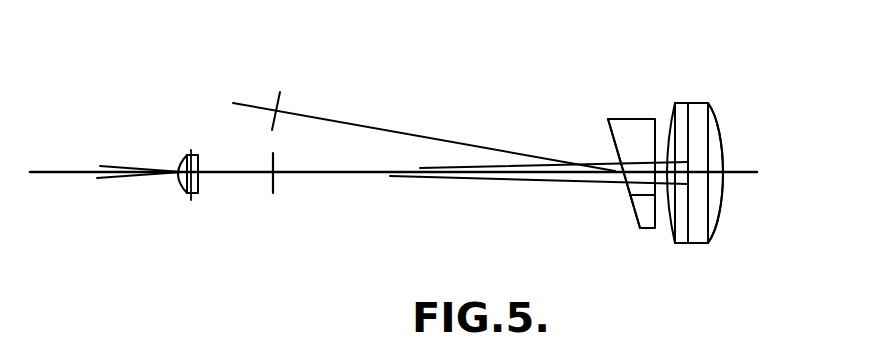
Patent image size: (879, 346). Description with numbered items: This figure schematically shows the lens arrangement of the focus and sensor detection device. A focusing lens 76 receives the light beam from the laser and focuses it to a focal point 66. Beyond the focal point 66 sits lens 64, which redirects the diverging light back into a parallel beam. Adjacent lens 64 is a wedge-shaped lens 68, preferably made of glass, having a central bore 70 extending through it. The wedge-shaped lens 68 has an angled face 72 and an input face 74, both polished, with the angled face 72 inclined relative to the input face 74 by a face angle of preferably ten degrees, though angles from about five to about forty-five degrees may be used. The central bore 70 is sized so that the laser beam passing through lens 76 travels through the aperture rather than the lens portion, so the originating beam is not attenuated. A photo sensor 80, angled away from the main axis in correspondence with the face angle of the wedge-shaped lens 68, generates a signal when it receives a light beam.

The lens 64 is at (720, 130).
The focal point 66 is at (275, 182).
The wedge-shaped lens 68 is at (611, 118).
The central bore 70 is at (644, 189).
The angled face 72 is at (612, 140).
The input face 74 is at (661, 121).
The focusing lens 76 is at (191, 150).
The photo sensor 80 is at (286, 113).